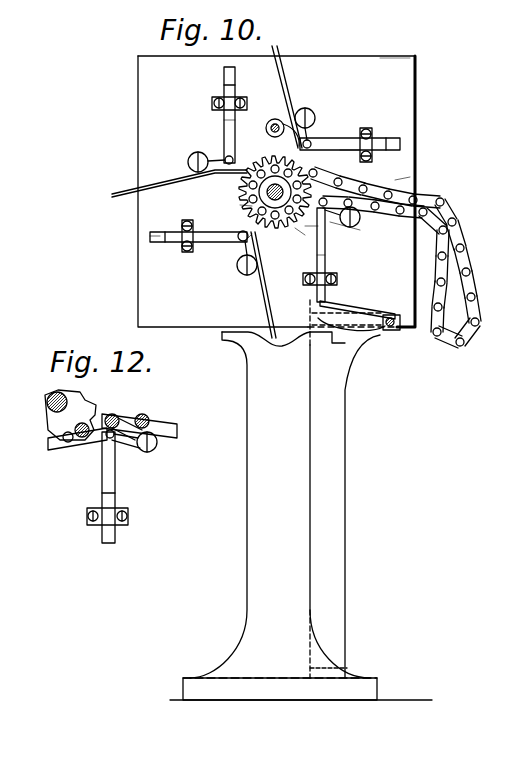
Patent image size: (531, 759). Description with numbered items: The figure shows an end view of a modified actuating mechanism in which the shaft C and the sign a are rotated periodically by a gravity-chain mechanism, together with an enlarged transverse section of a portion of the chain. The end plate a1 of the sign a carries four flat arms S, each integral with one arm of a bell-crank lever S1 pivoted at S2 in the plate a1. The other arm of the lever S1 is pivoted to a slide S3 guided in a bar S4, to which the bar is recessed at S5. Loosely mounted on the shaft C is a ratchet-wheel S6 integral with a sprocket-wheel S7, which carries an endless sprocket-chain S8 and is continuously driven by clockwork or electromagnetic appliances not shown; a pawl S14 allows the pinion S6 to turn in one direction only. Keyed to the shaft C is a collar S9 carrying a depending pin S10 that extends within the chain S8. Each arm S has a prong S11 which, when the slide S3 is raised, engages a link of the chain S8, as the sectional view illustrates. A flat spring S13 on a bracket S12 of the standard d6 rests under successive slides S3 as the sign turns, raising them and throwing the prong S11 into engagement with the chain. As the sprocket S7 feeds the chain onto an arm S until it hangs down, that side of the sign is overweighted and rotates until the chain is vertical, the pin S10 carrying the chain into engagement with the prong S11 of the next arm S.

In FIG. 10, the sign a is at (356, 57).
In FIG. 10, the plate a1 is at (386, 86).
In FIG. 10, the flat arm S is at (118, 194).
In FIG. 12, the flat arm S is at (172, 428).
In FIG. 10, the bell-crank lever S1 is at (224, 158).
In FIG. 12, the bell-crank lever S1 is at (146, 452).
In FIG. 10, the pivot S2 is at (356, 247).
In FIG. 10, the slide S3 is at (236, 126).
In FIG. 10, the bar S4 is at (214, 90).
In FIG. 12, the bar S4 is at (128, 523).
In FIG. 10, the recess S5 is at (236, 86).
In FIG. 12, the recess S5 is at (114, 483).
In FIG. 10, the ratchet-wheel S6 is at (297, 237).
In FIG. 10, the sprocket-wheel S7 is at (250, 210).
In FIG. 12, the sprocket-wheel S7 is at (55, 424).
In FIG. 10, the sprocket-chain S8 is at (462, 238).
In FIG. 12, the sprocket-chain S8 is at (96, 441).
In FIG. 10, the collar S9 is at (246, 196).
In FIG. 10, the pin S10 is at (391, 177).
In FIG. 10, the prong S11 is at (312, 143).
In FIG. 12, the prong S11 is at (120, 416).
In FIG. 10, the bracket S12 is at (346, 394).
In FIG. 10, the flat spring S13 is at (373, 309).
In FIG. 10, the pawl S14 is at (290, 150).
In FIG. 10, the shaft C is at (306, 238).
In FIG. 10, the standard d6 is at (301, 500).